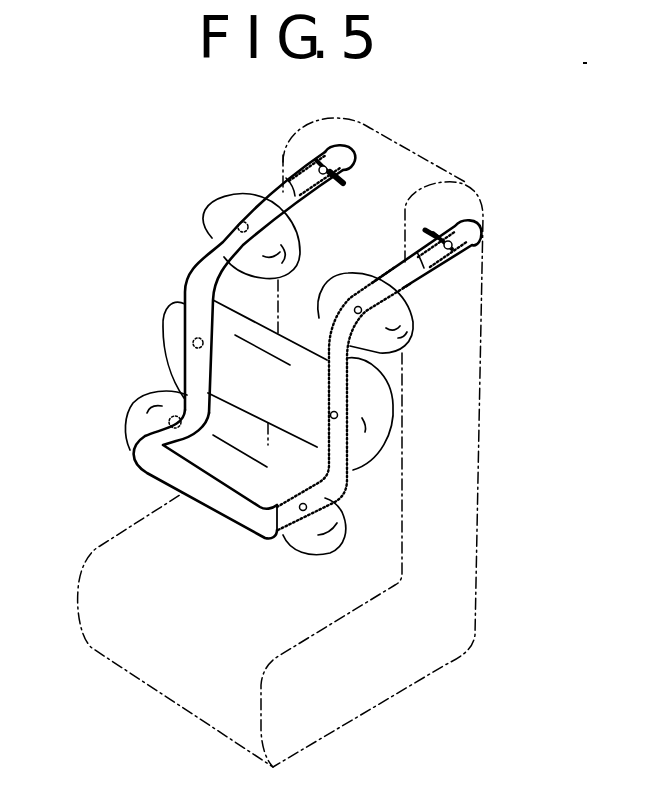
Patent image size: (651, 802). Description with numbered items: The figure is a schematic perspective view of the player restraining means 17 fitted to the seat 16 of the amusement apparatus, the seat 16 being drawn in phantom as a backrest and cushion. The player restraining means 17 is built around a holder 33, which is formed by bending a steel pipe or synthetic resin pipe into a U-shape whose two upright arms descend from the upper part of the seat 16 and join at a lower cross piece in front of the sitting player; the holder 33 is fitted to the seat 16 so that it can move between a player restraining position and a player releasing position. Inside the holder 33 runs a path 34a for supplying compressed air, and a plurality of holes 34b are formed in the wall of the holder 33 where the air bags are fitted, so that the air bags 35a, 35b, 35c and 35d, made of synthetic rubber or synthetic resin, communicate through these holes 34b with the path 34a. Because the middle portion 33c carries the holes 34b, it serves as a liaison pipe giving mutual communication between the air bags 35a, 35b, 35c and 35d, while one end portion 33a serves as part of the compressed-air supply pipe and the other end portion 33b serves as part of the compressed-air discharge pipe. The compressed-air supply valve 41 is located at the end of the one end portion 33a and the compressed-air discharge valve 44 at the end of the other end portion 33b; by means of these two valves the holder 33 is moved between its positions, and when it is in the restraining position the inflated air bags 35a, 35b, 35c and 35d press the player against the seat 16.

The seat 16 is at (481, 398).
The player restraining means 17 is at (138, 226).
The holder 33 is at (141, 478).
The one end portion 33a is at (417, 342).
The other end portion 33b is at (317, 255).
The middle portion 33c is at (207, 495).
The path 34a is at (347, 360).
The holes 34b is at (238, 229).
The air bag 35a is at (410, 338).
The air bag 35b is at (387, 443).
The air bag 35c is at (291, 543).
The air bag 35d is at (206, 213).
The compressed-air supply valve 41 is at (483, 228).
The compressed-air discharge valve 44 is at (356, 156).